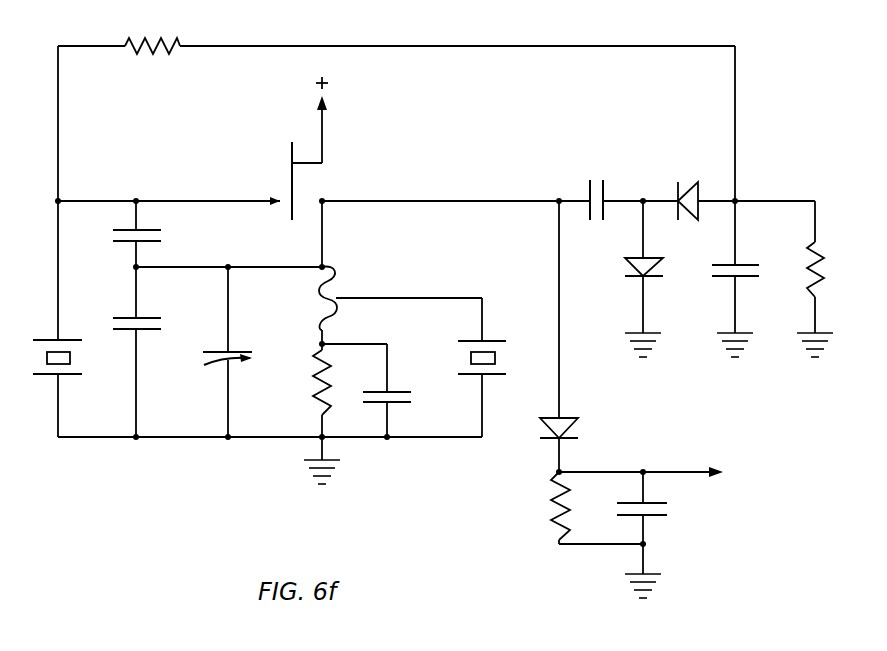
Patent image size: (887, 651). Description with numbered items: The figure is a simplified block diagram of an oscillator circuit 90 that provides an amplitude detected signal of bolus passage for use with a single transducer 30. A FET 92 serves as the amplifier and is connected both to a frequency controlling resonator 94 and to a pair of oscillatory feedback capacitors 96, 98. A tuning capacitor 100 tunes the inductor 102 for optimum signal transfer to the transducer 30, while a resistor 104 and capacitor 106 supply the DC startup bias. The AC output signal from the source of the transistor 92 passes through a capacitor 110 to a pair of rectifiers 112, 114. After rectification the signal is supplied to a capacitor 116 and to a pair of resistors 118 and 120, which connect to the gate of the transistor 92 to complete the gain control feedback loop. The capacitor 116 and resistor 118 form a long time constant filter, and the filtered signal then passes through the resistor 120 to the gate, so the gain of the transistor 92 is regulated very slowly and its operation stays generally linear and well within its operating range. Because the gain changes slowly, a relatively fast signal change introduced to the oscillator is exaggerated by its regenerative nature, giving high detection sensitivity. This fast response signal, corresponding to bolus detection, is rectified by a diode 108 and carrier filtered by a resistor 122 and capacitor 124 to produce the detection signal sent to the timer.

The oscillator circuit 90 is at (212, 523).
The FET 92 is at (290, 180).
The frequency controlling resonator 94 is at (72, 375).
The oscillatory feedback capacitor 96 is at (156, 227).
The oscillatory feedback capacitor 98 is at (155, 330).
The tuning capacitor 100 is at (240, 350).
The inductor 102 is at (324, 272).
The resistor 104 is at (320, 398).
The capacitor 106 is at (404, 403).
The transducer 30 is at (468, 341).
The diode 108 is at (578, 420).
The capacitor 110 is at (587, 188).
The rectifier 112 is at (628, 278).
The rectifier 114 is at (676, 184).
The capacitor 116 is at (750, 264).
The resistor 118 is at (806, 262).
The resistor 120 is at (133, 42).
The resistor 122 is at (552, 498).
The capacitor 124 is at (655, 514).